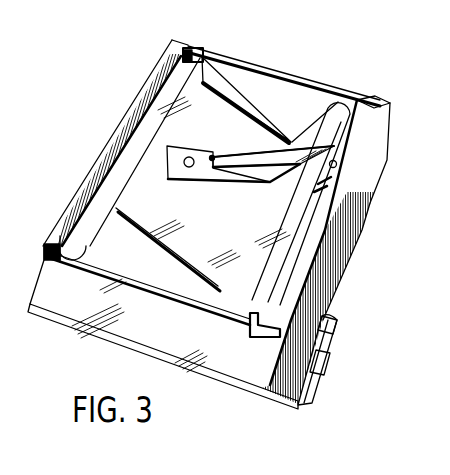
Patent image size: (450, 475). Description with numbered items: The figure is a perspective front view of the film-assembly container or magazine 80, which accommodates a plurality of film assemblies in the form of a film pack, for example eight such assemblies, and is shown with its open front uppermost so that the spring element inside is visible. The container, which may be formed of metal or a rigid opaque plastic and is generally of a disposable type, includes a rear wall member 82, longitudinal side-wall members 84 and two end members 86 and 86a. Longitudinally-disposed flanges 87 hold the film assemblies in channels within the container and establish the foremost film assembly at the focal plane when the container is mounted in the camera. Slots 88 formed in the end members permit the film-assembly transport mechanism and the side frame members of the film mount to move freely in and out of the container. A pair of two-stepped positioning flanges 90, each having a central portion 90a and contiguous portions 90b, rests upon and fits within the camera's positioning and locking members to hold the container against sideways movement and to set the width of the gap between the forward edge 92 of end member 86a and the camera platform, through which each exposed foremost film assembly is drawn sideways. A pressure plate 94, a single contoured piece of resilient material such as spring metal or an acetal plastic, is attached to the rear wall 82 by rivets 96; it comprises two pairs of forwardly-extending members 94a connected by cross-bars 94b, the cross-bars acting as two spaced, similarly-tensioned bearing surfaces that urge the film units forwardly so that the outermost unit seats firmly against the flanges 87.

The container or magazine 80 is at (233, 220).
The rear wall member 82 is at (213, 192).
The longitudinal side-wall members 84 is at (360, 213).
The end member 86 is at (277, 70).
The end member 86a is at (60, 314).
The longitudinally-disposed flanges 87 is at (255, 331).
The slots 88 is at (192, 50).
The two-stepped positioning flanges 90 is at (345, 366).
The central portion 90a is at (323, 354).
The contiguous portions 90b is at (331, 322).
The forward edge 92 is at (121, 272).
The pressure plate 94 is at (295, 133).
The forwardly-extending members 94a is at (252, 158).
The cross-bars 94b is at (142, 130).
The rivets 96 is at (186, 158).